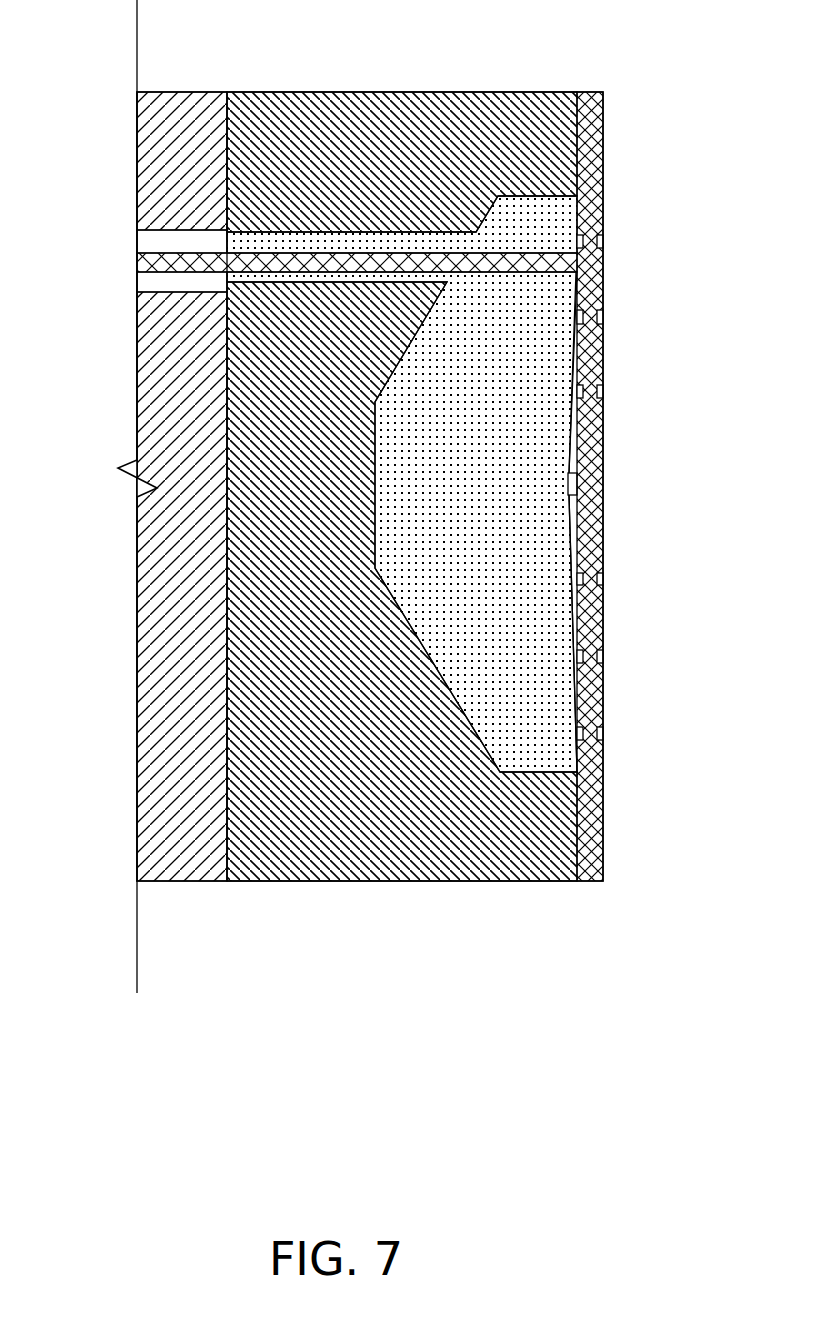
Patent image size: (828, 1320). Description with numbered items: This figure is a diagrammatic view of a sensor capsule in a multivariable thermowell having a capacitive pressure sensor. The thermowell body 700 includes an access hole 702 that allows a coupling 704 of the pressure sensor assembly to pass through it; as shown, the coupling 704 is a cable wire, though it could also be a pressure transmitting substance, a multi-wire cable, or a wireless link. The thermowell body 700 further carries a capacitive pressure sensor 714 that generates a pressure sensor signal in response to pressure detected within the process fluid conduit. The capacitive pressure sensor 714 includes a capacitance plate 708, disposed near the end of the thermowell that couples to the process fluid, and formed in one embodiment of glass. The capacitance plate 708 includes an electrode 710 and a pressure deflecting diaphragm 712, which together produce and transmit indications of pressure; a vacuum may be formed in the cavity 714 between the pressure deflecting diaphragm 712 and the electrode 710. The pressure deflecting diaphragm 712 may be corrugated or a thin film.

The thermowell body 700 is at (135, 758).
The access hole 702 is at (157, 237).
The coupling 704 is at (327, 262).
The capacitance plate 708 is at (467, 728).
The electrode 710 is at (580, 483).
The pressure deflecting diaphragm 712 is at (592, 280).
The capacitive pressure sensor 714 is at (572, 342).